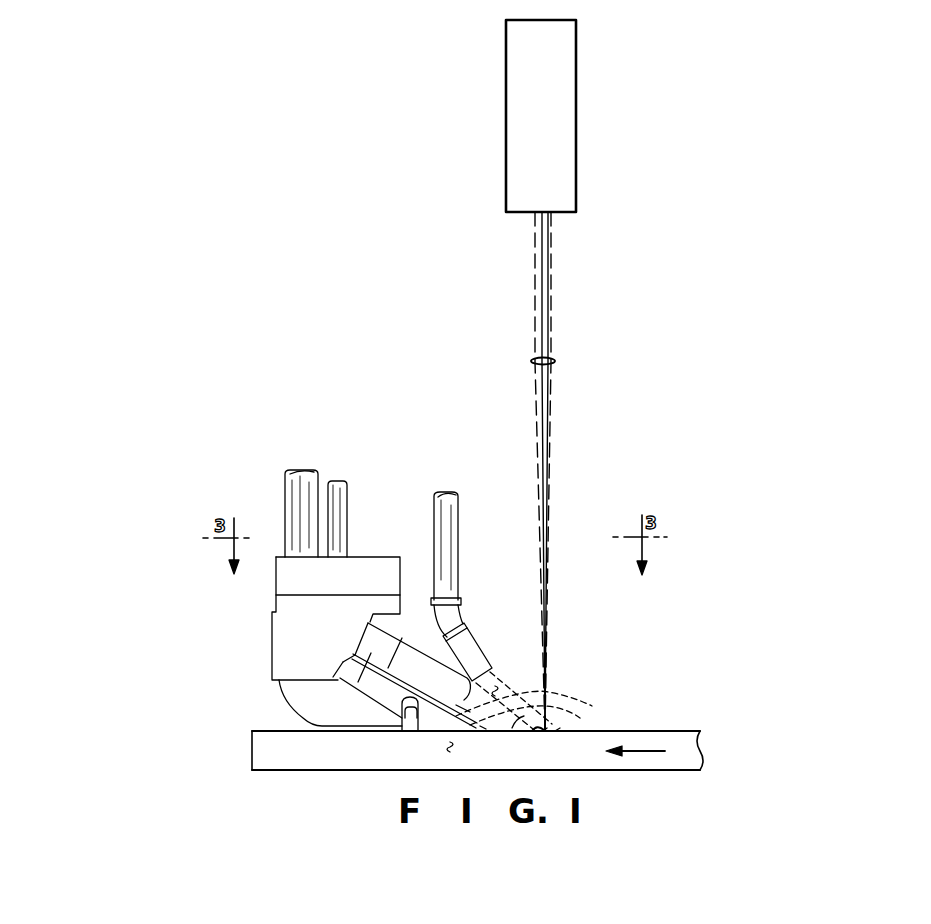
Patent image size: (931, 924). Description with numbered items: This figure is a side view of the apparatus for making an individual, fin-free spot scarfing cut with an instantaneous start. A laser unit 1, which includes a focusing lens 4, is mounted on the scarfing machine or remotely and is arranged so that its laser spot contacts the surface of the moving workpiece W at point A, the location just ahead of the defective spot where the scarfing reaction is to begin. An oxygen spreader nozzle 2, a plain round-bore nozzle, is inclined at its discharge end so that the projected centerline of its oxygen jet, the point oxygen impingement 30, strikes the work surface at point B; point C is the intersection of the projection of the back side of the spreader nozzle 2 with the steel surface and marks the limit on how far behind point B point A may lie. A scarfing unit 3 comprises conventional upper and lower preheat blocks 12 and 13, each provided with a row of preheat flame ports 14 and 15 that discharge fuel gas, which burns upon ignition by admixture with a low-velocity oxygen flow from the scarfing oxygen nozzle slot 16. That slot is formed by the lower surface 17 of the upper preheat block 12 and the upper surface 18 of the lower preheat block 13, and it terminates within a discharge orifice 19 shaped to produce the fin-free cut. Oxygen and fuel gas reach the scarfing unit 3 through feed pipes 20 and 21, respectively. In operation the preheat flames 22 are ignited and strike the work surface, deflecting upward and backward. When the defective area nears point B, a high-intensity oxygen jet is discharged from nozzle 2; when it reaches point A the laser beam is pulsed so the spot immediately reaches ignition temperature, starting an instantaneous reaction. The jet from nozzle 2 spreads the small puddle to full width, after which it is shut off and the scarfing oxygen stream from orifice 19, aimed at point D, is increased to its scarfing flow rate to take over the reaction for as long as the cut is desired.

The laser unit 1 is at (576, 122).
The oxygen spreader nozzle 2 is at (459, 524).
The scarfing unit 3 is at (272, 651).
The focusing lens 4 is at (553, 360).
The upper preheat block 12 is at (412, 668).
The lower preheat block 13 is at (378, 695).
The preheat flame ports 14 is at (460, 703).
The preheat flame ports 15 is at (403, 729).
The scarfing oxygen nozzle slot 16 is at (361, 697).
The lower surface of upper preheat block 17 is at (390, 651).
The upper surface of lower preheat block 18 is at (346, 683).
The discharge orifice 19 is at (418, 730).
The feed pipe 20 is at (285, 523).
The feed pipe 21 is at (349, 523).
The preheat flames 22 is at (558, 702).
The point oxygen impingement 30 is at (494, 686).
The workpiece W is at (658, 737).
The point A is at (540, 731).
The point B is at (559, 732).
The point C is at (532, 733).
The point D is at (485, 729).